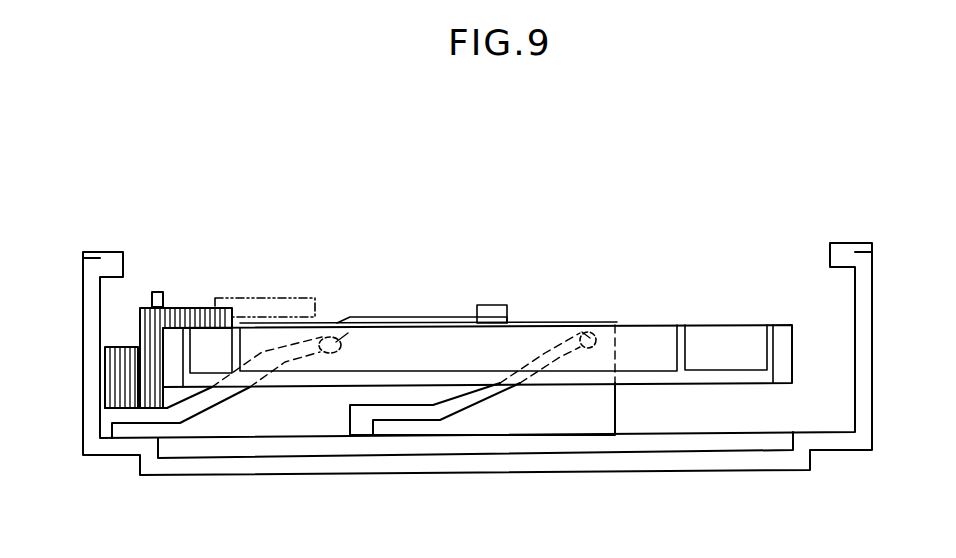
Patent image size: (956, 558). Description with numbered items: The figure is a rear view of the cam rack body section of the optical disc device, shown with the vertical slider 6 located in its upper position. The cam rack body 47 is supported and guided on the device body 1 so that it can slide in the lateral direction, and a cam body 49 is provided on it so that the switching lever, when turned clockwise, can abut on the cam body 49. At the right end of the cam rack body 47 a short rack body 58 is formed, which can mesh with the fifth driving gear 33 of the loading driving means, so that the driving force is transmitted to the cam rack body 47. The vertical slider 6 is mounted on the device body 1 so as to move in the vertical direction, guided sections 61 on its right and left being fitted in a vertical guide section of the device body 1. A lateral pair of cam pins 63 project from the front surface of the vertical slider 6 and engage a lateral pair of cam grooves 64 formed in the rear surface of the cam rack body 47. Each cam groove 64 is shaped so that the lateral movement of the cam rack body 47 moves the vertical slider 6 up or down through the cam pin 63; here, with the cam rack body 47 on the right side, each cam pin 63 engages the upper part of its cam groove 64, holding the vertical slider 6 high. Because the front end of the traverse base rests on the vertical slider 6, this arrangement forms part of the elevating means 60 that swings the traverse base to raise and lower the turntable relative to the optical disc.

The device body 1 is at (778, 458).
The vertical slider 6 is at (575, 368).
The fifth driving gear 33 is at (272, 298).
The cam rack body 47 is at (607, 427).
The cam body 49 is at (410, 317).
The short rack body 58 is at (105, 382).
The elevating means 60 is at (245, 403).
The guided sections 61 is at (173, 365).
The cam pins 63 is at (345, 333).
The cam grooves 64 is at (208, 402).